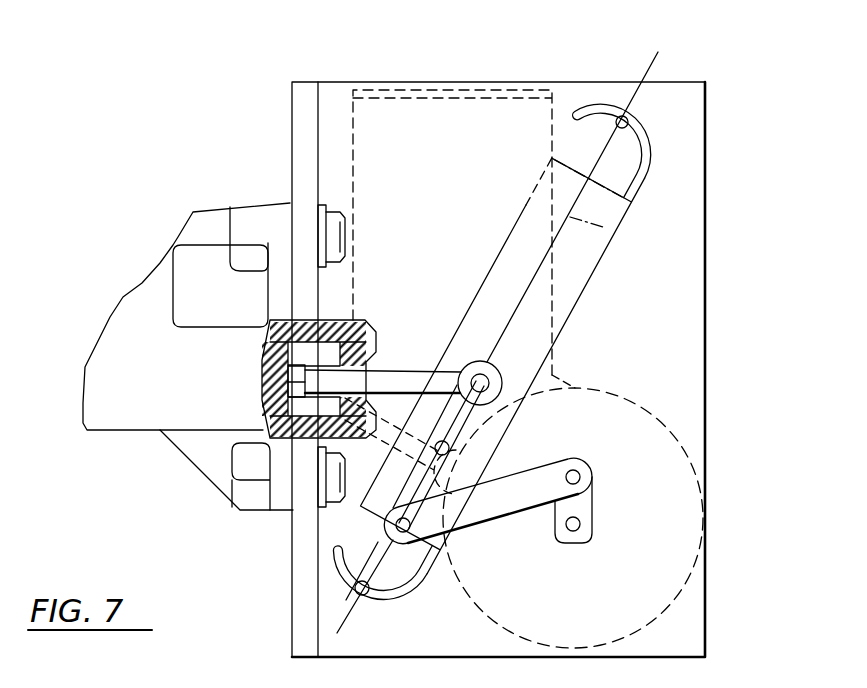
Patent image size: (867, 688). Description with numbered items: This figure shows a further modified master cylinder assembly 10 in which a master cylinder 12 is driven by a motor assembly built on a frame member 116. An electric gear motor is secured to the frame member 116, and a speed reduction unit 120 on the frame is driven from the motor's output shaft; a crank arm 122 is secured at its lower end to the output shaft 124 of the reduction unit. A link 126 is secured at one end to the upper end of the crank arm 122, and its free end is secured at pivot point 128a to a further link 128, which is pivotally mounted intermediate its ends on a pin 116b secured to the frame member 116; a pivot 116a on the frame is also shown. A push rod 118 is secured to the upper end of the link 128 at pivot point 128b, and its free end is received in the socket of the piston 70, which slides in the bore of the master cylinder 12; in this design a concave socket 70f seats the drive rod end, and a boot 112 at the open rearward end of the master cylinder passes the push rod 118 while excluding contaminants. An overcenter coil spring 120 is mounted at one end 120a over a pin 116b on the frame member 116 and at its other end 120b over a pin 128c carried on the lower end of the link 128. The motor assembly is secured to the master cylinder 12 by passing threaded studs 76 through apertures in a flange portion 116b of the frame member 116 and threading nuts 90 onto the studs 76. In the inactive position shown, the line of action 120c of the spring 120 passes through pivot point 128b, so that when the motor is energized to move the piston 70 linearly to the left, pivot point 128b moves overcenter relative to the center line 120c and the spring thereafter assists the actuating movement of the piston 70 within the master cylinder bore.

The latch assembly 10 is at (247, 120).
The master cylinder 12 is at (124, 255).
The piston 70 is at (283, 379).
The concave socket 70f is at (283, 388).
The threaded metal studs 76 is at (340, 238).
The nuts 90 is at (362, 334).
The boot 112 is at (362, 318).
The frame member 116 is at (485, 82).
The pivot pin on plate 116a is at (450, 448).
The pin 116b is at (303, 82).
The push rod 118 is at (472, 269).
The overcenter coil spring 120 is at (567, 371).
The spring end 120a is at (647, 170).
The spring end 120b is at (400, 601).
The line of action 120c is at (627, 207).
The crank arm 122 is at (526, 498).
The output shaft 124 is at (571, 531).
The link 126 is at (561, 462).
The link 128 is at (489, 352).
The pivot point 128a is at (385, 538).
The pivot point 128b is at (473, 376).
The pin 128c is at (366, 596).